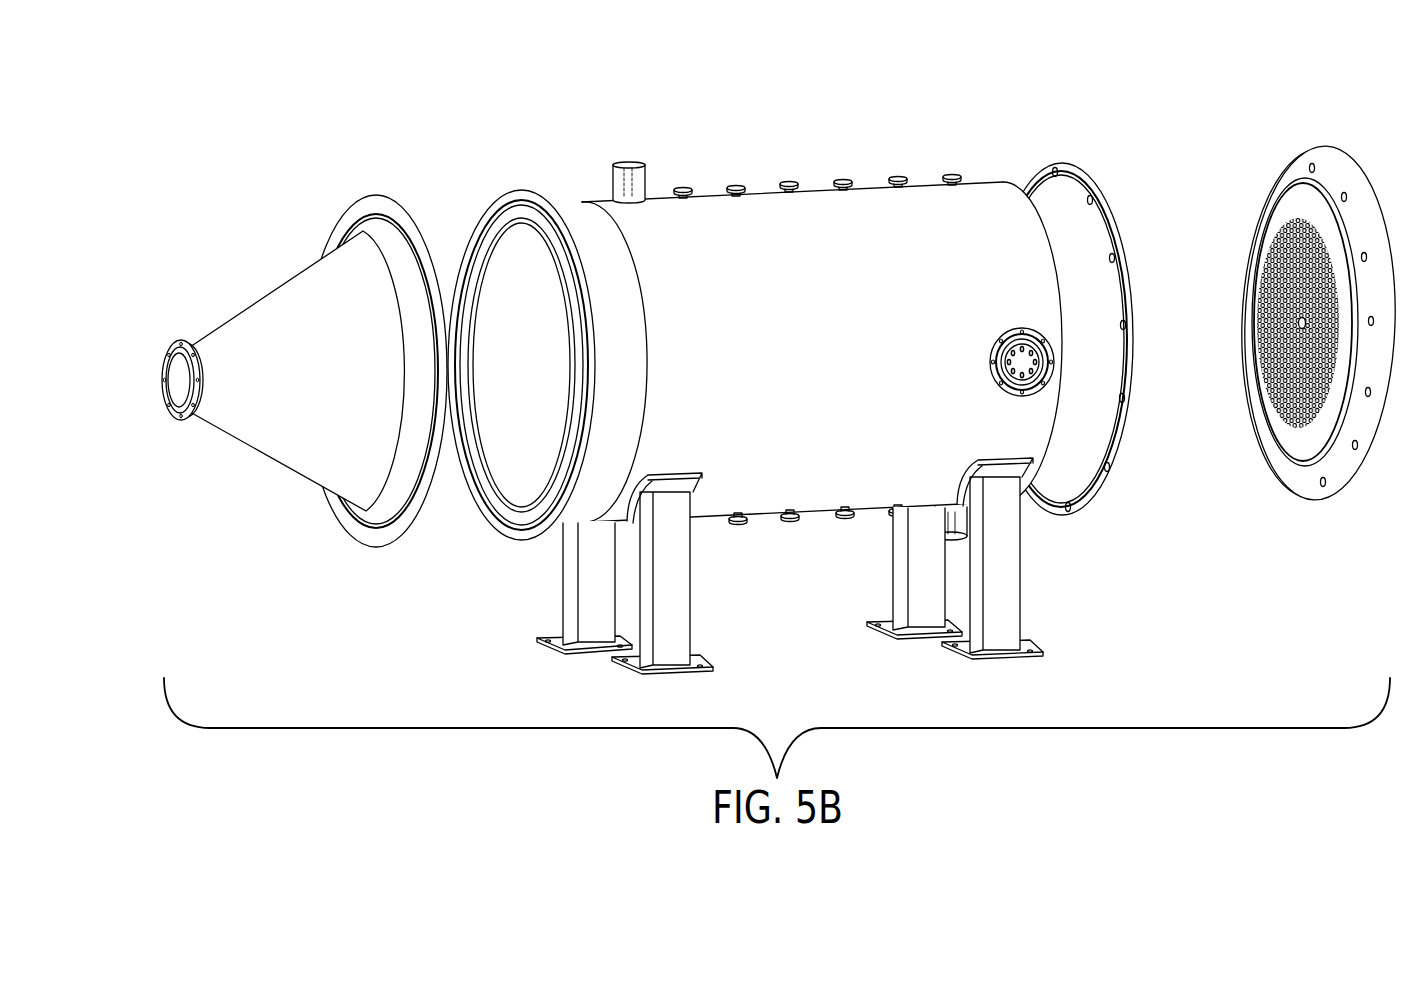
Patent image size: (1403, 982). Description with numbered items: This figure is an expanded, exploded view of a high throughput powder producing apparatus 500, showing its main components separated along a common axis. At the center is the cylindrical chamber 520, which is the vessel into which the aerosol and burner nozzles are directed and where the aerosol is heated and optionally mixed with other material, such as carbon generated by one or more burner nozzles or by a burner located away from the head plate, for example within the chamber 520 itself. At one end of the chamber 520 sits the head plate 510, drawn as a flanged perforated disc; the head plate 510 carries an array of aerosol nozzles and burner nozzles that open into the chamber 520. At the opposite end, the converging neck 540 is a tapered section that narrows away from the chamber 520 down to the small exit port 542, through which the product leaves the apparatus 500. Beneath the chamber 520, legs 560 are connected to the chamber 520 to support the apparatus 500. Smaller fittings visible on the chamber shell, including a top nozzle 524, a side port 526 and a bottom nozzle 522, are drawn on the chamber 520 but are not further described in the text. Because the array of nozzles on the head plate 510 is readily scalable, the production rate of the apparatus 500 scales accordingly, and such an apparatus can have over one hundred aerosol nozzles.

The apparatus 500 is at (1160, 116).
The head plate 510 is at (1330, 167).
The chamber 520 is at (922, 197).
The bottom nozzle 522 is at (960, 525).
The top nozzle 524 is at (633, 163).
The port 526 is at (1006, 363).
The converging neck 540 is at (300, 286).
The exit port 542 is at (168, 355).
The legs 560 is at (903, 585).